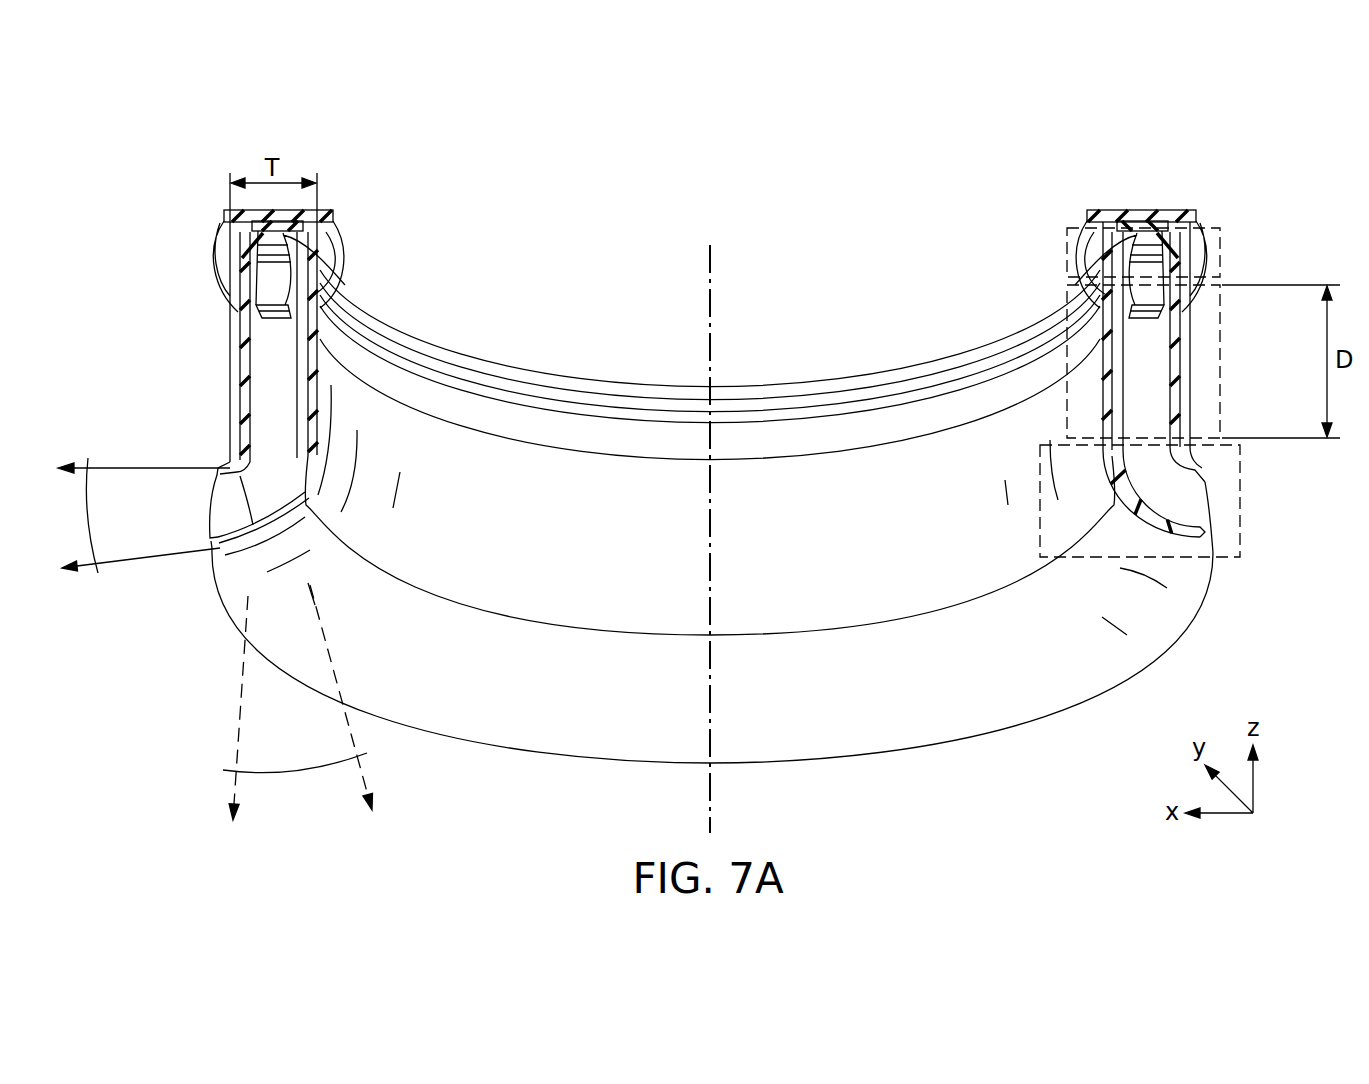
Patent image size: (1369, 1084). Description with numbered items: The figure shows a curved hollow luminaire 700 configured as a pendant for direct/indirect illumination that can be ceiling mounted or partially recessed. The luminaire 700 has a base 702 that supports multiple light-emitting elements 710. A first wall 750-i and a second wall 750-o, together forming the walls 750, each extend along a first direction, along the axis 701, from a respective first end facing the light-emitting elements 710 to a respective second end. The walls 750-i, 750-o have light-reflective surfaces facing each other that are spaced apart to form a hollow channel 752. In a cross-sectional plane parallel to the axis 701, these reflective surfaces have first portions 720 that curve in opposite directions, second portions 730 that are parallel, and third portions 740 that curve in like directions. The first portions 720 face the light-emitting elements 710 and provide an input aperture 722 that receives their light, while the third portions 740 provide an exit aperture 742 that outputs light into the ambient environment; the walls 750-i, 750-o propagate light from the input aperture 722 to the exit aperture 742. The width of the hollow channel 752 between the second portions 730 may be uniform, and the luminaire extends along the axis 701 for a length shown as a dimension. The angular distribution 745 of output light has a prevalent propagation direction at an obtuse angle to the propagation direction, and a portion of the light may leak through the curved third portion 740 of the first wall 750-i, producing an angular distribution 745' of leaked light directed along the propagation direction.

The hollow luminaire 700 is at (459, 158).
The axis 701 is at (713, 272).
The base 702 is at (1098, 212).
The light-emitting elements 710 is at (292, 290).
The first portions 720 is at (1223, 241).
The input aperture 722 is at (1142, 235).
The second portions 730 is at (1223, 349).
The third portions 740 is at (1243, 520).
The exit aperture 742 is at (1200, 496).
The angular distribution of output light 745 is at (144, 544).
The angular distribution of leaked light 745' is at (250, 707).
The walls 750 is at (121, 302).
The first wall 750-i is at (243, 328).
The second wall 750-o is at (238, 368).
The hollow channel 752 is at (270, 384).